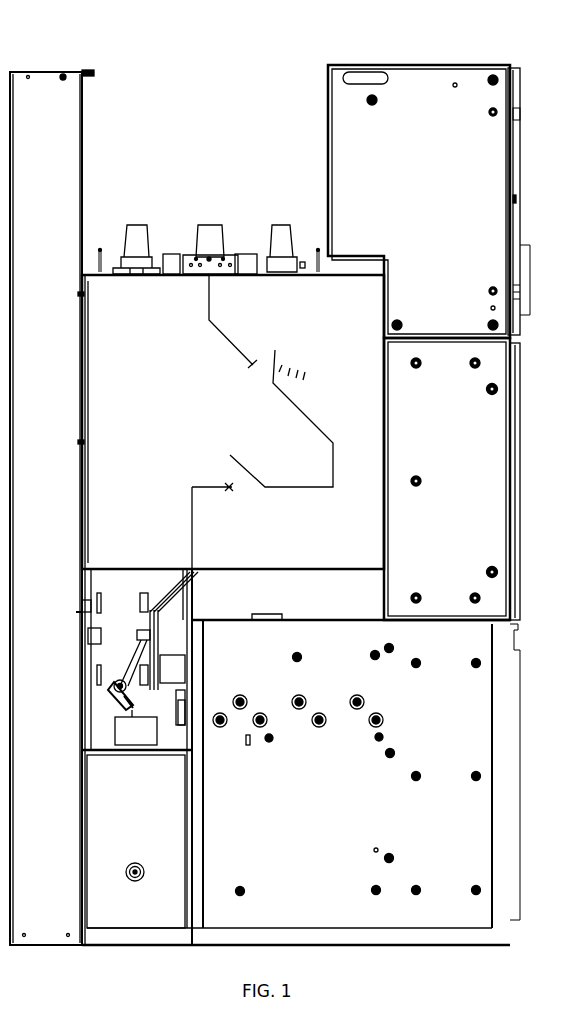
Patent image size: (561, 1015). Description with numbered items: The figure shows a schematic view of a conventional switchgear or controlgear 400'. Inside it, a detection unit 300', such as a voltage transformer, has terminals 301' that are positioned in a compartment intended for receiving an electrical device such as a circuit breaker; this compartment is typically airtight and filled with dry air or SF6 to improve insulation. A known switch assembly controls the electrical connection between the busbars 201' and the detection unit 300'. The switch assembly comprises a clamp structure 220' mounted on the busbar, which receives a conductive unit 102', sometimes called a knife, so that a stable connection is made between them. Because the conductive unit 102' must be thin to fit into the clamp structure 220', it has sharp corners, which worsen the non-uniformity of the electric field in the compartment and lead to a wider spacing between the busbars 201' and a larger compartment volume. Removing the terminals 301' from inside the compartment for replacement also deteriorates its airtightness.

The switchgear or controlgear 400' is at (270, 487).
The clamp structure 220' is at (92, 613).
The conductive unit 102' is at (92, 669).
The terminals 301' is at (97, 725).
The detection unit 300' is at (110, 839).
The busbars 201' is at (213, 631).